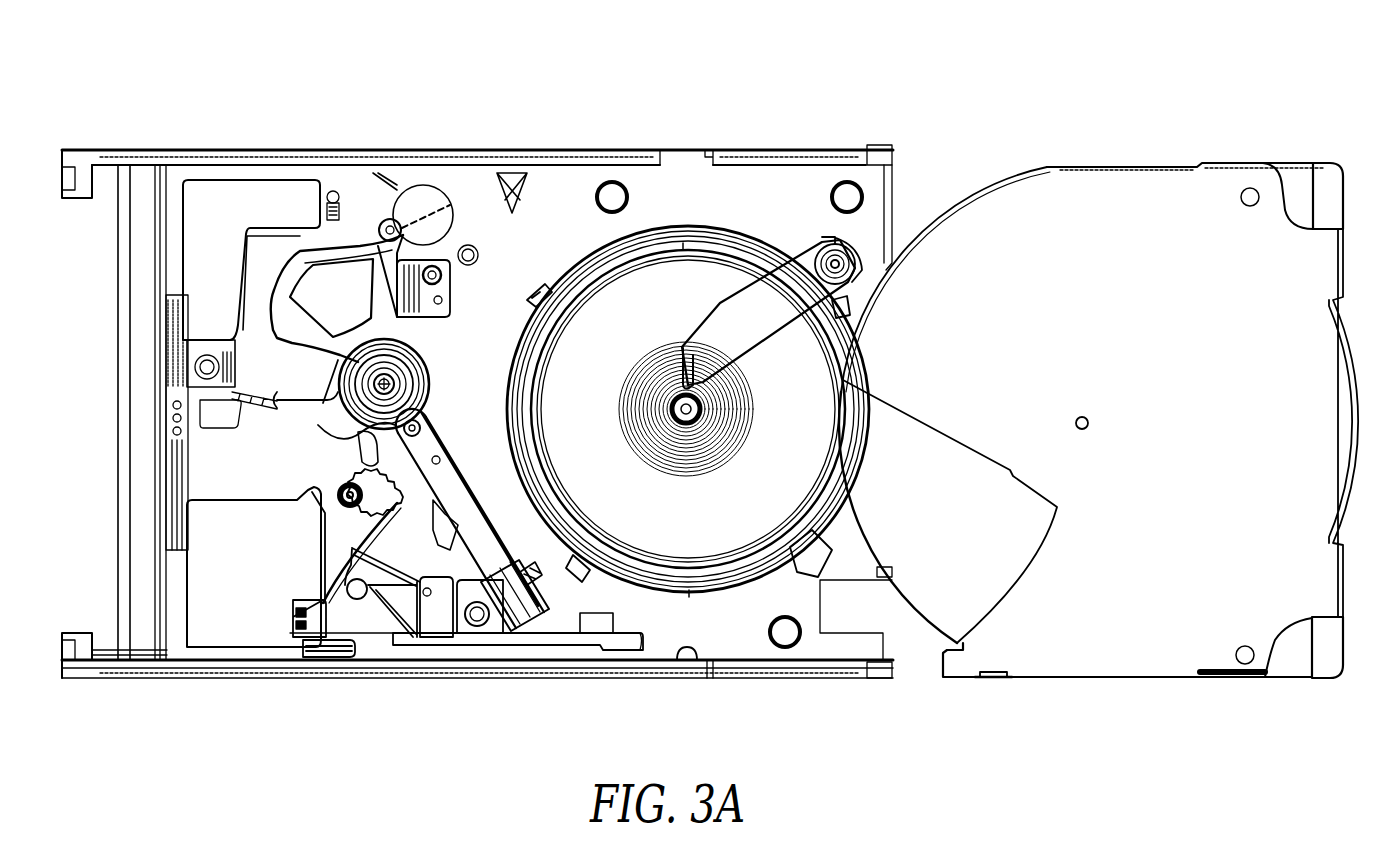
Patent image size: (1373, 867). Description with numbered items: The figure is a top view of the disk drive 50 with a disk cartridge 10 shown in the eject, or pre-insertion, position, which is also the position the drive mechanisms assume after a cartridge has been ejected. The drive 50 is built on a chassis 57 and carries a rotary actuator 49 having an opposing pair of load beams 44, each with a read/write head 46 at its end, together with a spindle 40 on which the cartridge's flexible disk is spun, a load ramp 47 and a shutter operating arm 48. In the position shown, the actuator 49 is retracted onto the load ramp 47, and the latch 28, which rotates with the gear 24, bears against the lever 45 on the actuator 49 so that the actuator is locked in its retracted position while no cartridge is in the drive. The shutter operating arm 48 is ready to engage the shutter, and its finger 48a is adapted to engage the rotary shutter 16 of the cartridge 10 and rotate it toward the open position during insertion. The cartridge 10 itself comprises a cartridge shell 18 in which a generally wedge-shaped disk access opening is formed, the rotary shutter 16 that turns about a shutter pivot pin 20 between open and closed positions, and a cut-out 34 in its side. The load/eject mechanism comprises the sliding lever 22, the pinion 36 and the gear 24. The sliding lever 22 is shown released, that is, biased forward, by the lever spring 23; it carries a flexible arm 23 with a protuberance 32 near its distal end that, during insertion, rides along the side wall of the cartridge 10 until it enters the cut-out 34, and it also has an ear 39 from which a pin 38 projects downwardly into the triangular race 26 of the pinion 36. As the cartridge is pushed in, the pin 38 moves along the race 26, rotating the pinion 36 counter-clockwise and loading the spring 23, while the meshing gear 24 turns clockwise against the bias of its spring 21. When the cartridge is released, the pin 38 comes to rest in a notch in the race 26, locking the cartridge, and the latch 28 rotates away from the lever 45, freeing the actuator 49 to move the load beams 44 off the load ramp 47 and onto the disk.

The disk cartridge 10 is at (1185, 140).
The rotary shutter 16 is at (930, 615).
The cartridge shell 18 is at (1008, 215).
The shutter pivot pin 20 is at (1092, 412).
The spring 21 is at (323, 528).
The sliding lever 22 is at (493, 643).
The lever spring 23 is at (337, 617).
The gear 24 is at (390, 468).
The triangular shaped race 26 is at (383, 520).
The latch 28 is at (360, 448).
The protuberance 32 is at (683, 650).
The cut-out 34 is at (995, 673).
The pinion 36 is at (388, 636).
The pin 38 is at (426, 554).
The ear 39 is at (458, 634).
The spindle 40 is at (680, 478).
The load beams 44 is at (445, 462).
The lever 45 is at (340, 432).
The read/write head 46 is at (537, 607).
The load ramp 47 is at (527, 568).
The shutter operating arm 48 is at (770, 334).
The finger 48a is at (668, 360).
The actuator 49 is at (425, 368).
The disk drive 50 is at (541, 125).
The chassis 57 is at (470, 185).